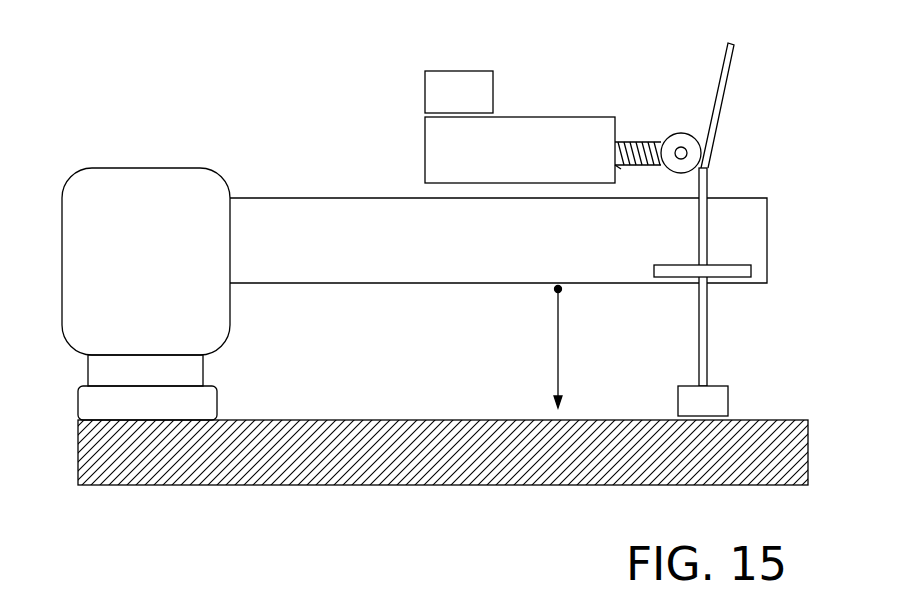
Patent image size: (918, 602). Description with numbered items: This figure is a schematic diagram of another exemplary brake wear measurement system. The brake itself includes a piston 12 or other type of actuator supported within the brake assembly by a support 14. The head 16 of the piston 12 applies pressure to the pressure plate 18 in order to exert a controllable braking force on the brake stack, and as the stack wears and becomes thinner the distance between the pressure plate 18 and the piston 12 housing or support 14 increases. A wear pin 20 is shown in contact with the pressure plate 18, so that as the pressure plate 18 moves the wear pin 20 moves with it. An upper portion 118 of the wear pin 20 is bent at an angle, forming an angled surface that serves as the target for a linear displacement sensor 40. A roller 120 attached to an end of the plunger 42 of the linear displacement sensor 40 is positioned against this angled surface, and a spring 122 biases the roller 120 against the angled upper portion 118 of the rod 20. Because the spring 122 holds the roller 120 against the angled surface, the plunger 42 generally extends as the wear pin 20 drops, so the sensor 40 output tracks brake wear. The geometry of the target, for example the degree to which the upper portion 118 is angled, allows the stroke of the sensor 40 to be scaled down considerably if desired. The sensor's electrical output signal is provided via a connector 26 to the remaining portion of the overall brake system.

The piston 12 is at (124, 282).
The support 14 is at (278, 227).
The head 16 is at (98, 410).
The pressure plate 18 is at (212, 455).
The wear pin 20 is at (708, 335).
The connector 26 is at (453, 95).
The linear displacement sensor 40 is at (540, 145).
The plunger 42 is at (618, 166).
The upper portion 118 is at (728, 85).
The roller 120 is at (679, 133).
The spring 122 is at (636, 142).